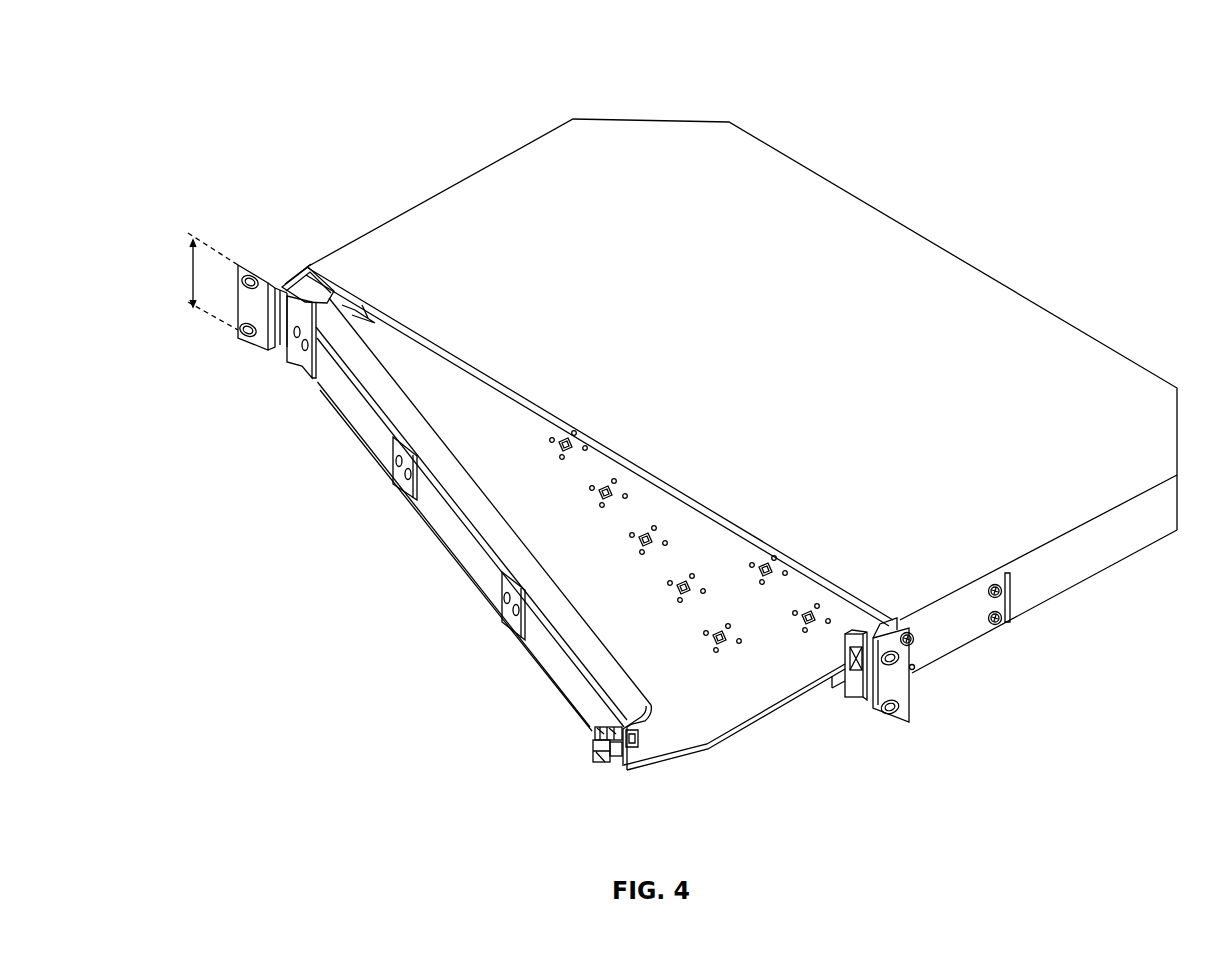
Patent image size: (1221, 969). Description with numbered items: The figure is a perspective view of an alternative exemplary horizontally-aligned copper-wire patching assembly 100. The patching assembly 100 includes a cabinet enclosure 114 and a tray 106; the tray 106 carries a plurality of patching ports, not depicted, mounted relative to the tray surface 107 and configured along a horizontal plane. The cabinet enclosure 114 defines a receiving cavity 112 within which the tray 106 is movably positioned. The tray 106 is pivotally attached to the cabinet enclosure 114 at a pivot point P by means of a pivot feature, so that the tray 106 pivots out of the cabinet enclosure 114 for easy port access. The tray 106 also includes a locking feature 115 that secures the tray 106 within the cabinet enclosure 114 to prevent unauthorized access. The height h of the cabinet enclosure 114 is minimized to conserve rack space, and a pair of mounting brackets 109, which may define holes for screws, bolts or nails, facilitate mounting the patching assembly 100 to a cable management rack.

The horizontally-aligned copper-wire patching assembly 100 is at (262, 60).
The tray 106 is at (589, 766).
The tray surface 107 is at (693, 715).
The mounting brackets 109 is at (265, 268).
The receiving cavity 112 is at (845, 612).
The cabinet enclosure 114 is at (1097, 291).
The locking feature 115 is at (597, 741).